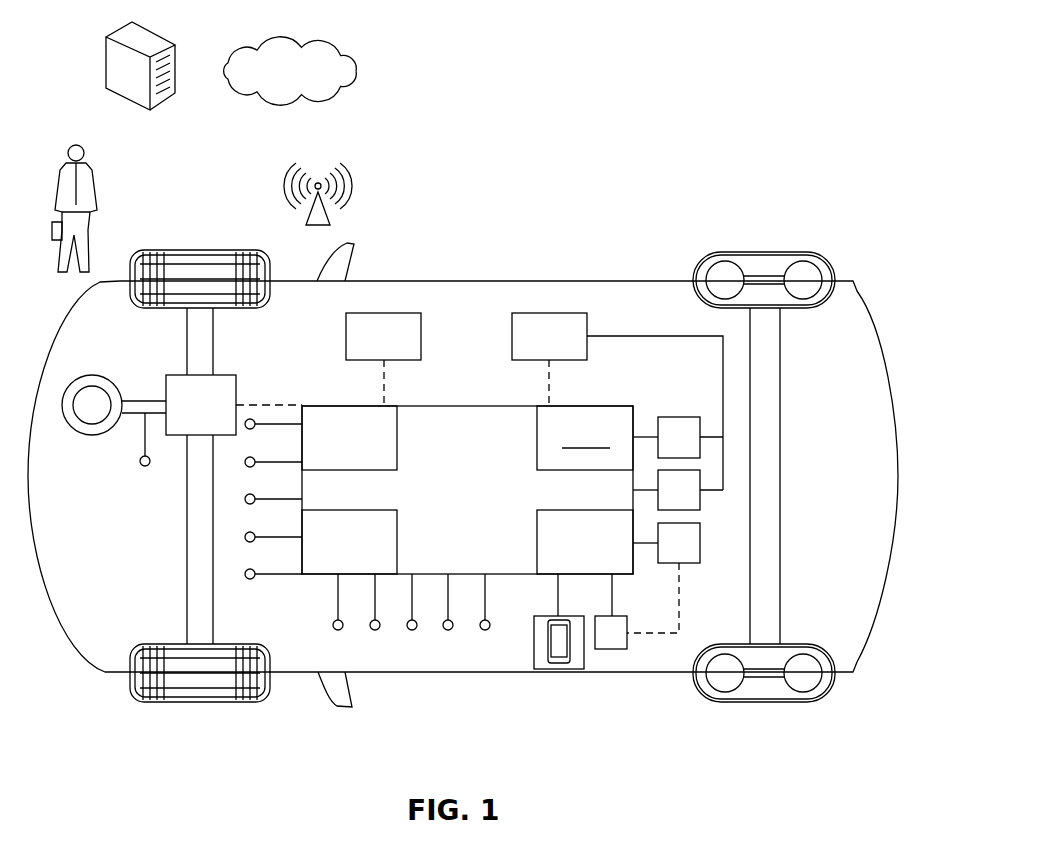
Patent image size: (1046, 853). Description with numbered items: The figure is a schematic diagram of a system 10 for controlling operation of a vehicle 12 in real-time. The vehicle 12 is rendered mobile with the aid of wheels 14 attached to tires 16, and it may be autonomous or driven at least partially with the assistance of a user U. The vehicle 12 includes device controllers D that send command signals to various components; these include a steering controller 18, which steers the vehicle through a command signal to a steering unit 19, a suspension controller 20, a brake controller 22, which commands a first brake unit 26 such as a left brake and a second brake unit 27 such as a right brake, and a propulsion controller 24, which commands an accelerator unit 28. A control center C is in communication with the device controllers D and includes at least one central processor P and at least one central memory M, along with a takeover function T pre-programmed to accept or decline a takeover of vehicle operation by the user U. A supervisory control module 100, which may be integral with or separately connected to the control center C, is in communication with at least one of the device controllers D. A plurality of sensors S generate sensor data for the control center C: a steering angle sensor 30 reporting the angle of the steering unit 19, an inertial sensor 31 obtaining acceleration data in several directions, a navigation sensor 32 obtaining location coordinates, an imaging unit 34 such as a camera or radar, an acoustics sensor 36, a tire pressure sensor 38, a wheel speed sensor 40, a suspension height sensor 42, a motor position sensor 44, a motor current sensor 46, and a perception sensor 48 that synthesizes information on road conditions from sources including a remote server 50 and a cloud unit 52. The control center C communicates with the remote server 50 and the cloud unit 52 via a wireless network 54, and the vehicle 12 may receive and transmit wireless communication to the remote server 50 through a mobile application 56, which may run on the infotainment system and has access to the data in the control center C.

The system 10 is at (717, 58).
The vehicle 12 is at (850, 166).
The wheels 14 is at (765, 275).
The tires 16 is at (200, 250).
The steering controller 18 is at (180, 375).
The steering unit 19 is at (92, 375).
The suspension controller 20 is at (384, 313).
The brake controller 22 is at (549, 313).
The propulsion controller 24 is at (611, 649).
The first brake unit 26 is at (700, 428).
The second brake unit 27 is at (700, 481).
The accelerator unit 28 is at (700, 534).
The steering angle sensor 30 is at (140, 464).
The inertial sensor 31 is at (252, 418).
The navigation sensor 32 is at (245, 464).
The imaging unit 34 is at (245, 501).
The acoustics sensor 36 is at (245, 539).
The tire pressure sensor 38 is at (250, 580).
The wheel speed sensor 40 is at (338, 630).
The suspension height sensor 42 is at (375, 630).
The motor position sensor 44 is at (412, 630).
The motor current sensor 46 is at (448, 630).
The perception sensor 48 is at (485, 630).
The remote server 50 is at (125, 35).
The cloud unit 52 is at (350, 42).
The wireless network 54 is at (360, 152).
The mobile application 56 is at (558, 669).
The supervisory control module 100 is at (585, 438).
The user U is at (63, 133).
The device controllers D is at (627, 180).
The sensors S is at (386, 752).
The control center C is at (467, 490).
The central memory M is at (349, 438).
The central processor P is at (349, 542).
The takeover function T is at (585, 542).